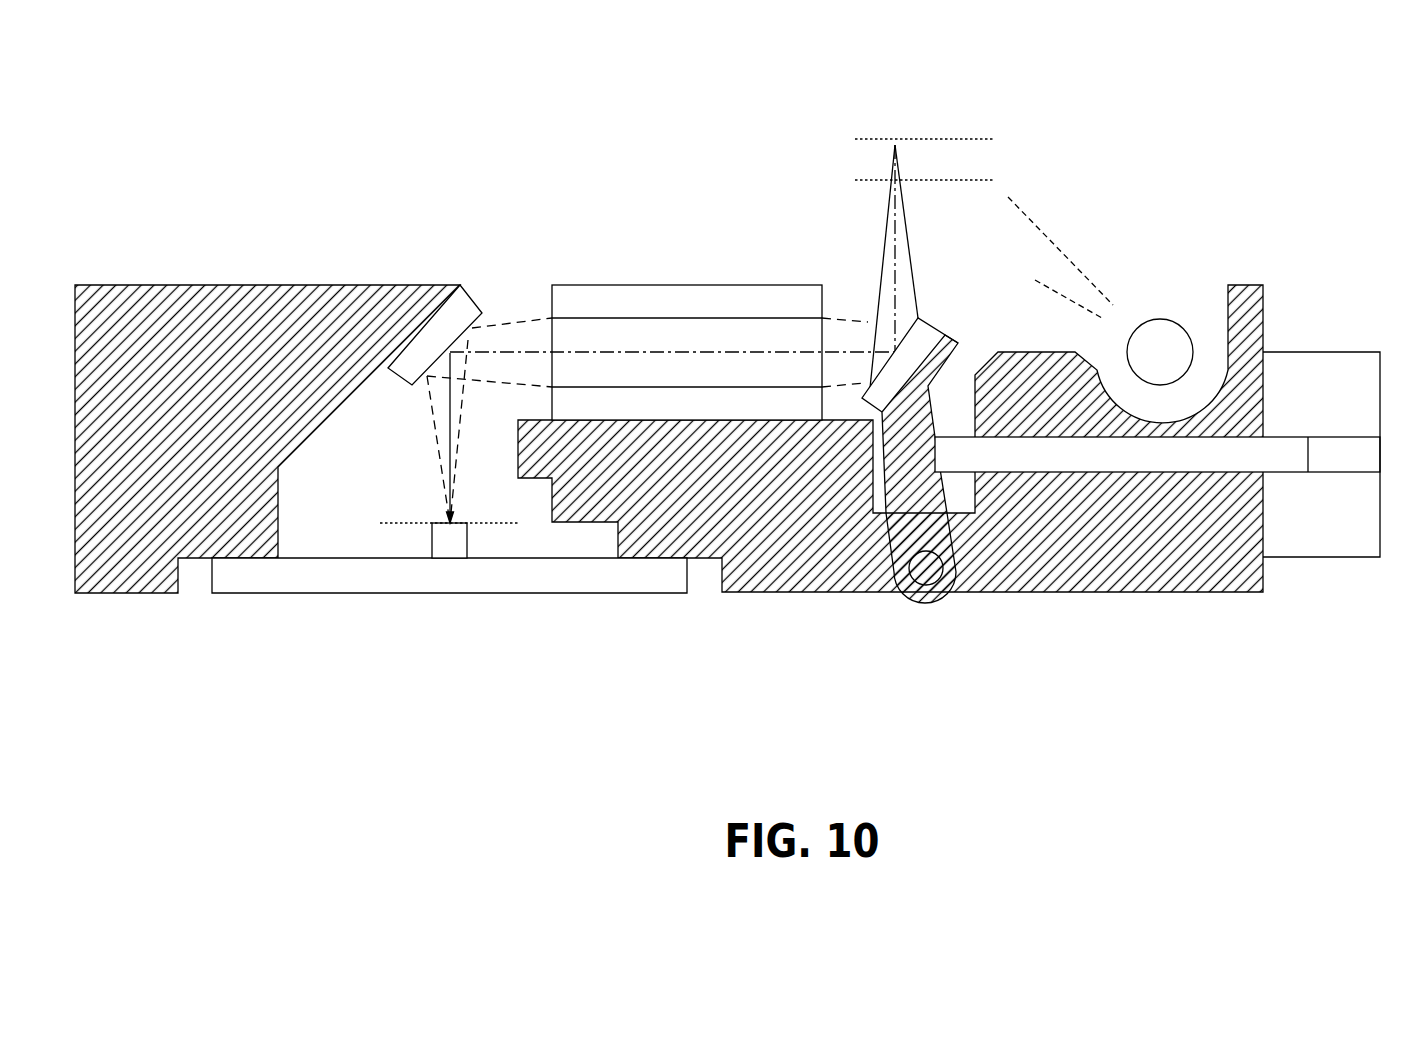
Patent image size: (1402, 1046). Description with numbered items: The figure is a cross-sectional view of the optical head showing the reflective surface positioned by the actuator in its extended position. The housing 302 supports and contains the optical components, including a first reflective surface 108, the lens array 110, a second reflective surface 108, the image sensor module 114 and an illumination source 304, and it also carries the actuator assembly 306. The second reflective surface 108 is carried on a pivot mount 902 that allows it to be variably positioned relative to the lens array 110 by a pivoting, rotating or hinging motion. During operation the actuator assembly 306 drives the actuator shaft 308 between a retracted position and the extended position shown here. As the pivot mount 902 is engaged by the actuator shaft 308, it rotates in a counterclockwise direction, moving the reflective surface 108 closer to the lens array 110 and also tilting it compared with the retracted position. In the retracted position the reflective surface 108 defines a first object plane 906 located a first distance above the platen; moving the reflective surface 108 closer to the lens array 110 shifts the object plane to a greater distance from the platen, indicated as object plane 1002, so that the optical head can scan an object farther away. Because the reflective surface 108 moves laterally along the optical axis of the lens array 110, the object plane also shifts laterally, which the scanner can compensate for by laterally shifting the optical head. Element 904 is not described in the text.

The reflective surface 108 is at (478, 306).
The lens array 110 is at (670, 285).
The image sensor module 114 is at (630, 618).
The housing 302 is at (1103, 592).
The illumination source 304 is at (1178, 323).
The actuator assembly 306 is at (1325, 627).
The actuator shaft 308 is at (1289, 472).
The pivot mount 902 is at (898, 643).
The sensor element 904 is at (400, 523).
The first object plane 906 is at (942, 180).
The object plane 1002 is at (970, 139).